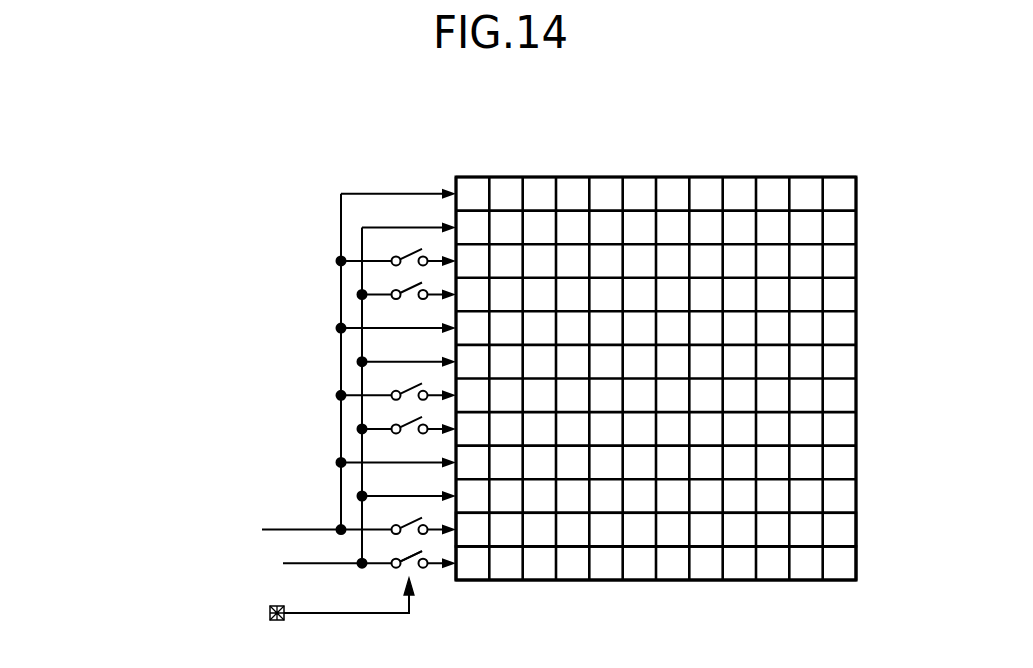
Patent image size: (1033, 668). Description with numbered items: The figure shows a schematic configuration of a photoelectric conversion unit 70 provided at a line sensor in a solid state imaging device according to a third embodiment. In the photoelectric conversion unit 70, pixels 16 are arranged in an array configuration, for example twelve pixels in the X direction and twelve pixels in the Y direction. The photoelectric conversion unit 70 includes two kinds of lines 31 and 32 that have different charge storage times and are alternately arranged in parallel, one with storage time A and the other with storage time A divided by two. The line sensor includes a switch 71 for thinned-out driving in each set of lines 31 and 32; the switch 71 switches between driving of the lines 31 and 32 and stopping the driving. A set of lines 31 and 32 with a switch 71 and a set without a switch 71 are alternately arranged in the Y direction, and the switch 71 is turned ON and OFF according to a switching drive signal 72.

The photoelectric conversion unit 70 is at (500, 364).
The pixels 16 is at (846, 228).
The line 31 is at (861, 529).
The line 32 is at (861, 563).
The switch 71 is at (416, 577).
The switching drive signal 72 is at (268, 612).